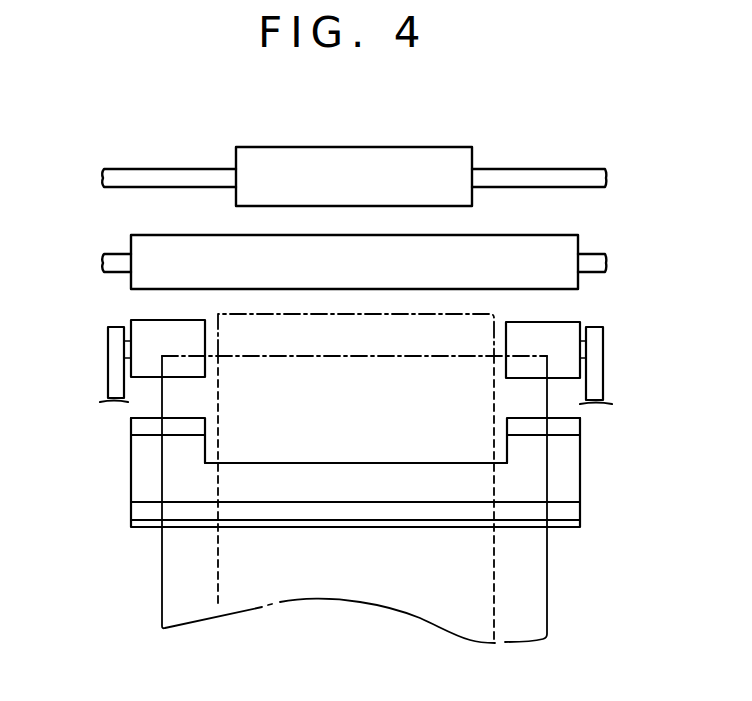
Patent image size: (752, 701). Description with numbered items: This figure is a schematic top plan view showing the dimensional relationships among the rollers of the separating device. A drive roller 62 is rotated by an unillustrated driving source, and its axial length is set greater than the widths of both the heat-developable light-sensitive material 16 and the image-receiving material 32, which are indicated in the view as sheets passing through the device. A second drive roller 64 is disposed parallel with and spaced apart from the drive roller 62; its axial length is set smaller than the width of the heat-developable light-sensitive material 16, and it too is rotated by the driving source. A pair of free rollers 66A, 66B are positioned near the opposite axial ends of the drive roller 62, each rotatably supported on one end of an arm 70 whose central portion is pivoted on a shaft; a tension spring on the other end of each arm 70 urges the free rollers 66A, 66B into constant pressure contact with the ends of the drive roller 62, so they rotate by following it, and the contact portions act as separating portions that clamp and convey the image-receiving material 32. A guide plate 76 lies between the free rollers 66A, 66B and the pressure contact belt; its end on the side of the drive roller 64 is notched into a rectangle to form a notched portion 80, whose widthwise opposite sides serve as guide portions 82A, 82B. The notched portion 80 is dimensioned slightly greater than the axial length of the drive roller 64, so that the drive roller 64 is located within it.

The drive roller 64 is at (476, 152).
The drive roller 62 is at (573, 233).
The heat-developable light-sensitive material 16 is at (494, 314).
The free roller 66A is at (148, 320).
The free roller 66B is at (567, 378).
The arm 70 is at (108, 378).
The guide portion 82A is at (135, 428).
The guide portion 82B is at (570, 427).
The notched portion 80 is at (313, 463).
The guide plate 76 is at (582, 487).
The image-receiving material 32 is at (552, 570).